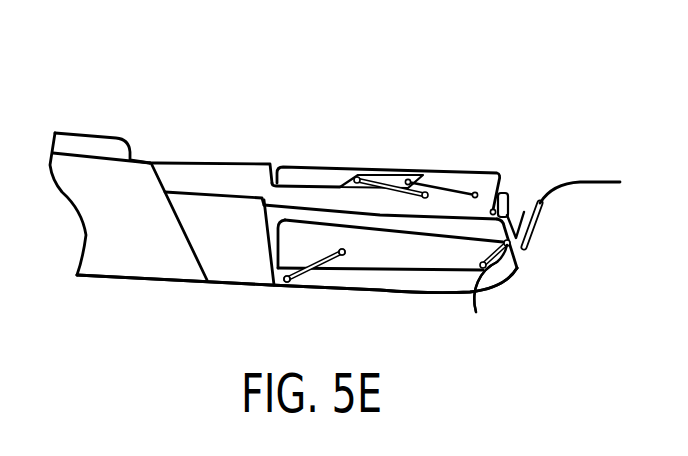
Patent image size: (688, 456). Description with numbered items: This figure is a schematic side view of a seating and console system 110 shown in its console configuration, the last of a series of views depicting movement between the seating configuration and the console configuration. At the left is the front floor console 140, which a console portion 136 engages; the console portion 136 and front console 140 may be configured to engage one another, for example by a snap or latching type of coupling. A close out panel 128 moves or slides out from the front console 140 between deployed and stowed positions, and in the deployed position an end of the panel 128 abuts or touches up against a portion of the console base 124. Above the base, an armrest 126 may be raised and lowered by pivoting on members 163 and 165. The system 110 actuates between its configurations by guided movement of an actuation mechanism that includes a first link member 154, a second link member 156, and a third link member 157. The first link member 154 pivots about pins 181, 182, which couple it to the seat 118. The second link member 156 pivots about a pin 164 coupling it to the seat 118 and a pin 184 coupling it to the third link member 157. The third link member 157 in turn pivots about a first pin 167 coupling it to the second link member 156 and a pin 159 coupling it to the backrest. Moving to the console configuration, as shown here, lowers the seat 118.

The seating and console system 110 is at (90, 51).
The seat 118 is at (395, 263).
The console base 124 is at (332, 197).
The armrest 126 is at (312, 175).
The close out panel 128 is at (205, 252).
The console portion 136 is at (210, 173).
The front floor console 140 is at (102, 173).
The first link member 154 is at (317, 261).
The second link member 156 is at (500, 272).
The third link member 157 is at (505, 198).
The pin 159 is at (495, 190).
The member 163 is at (370, 175).
The pin 164 is at (476, 312).
The member 165 is at (450, 178).
The first pin 167 is at (532, 227).
The pin 181 is at (293, 287).
The pin 182 is at (343, 250).
The pin 184 is at (520, 263).